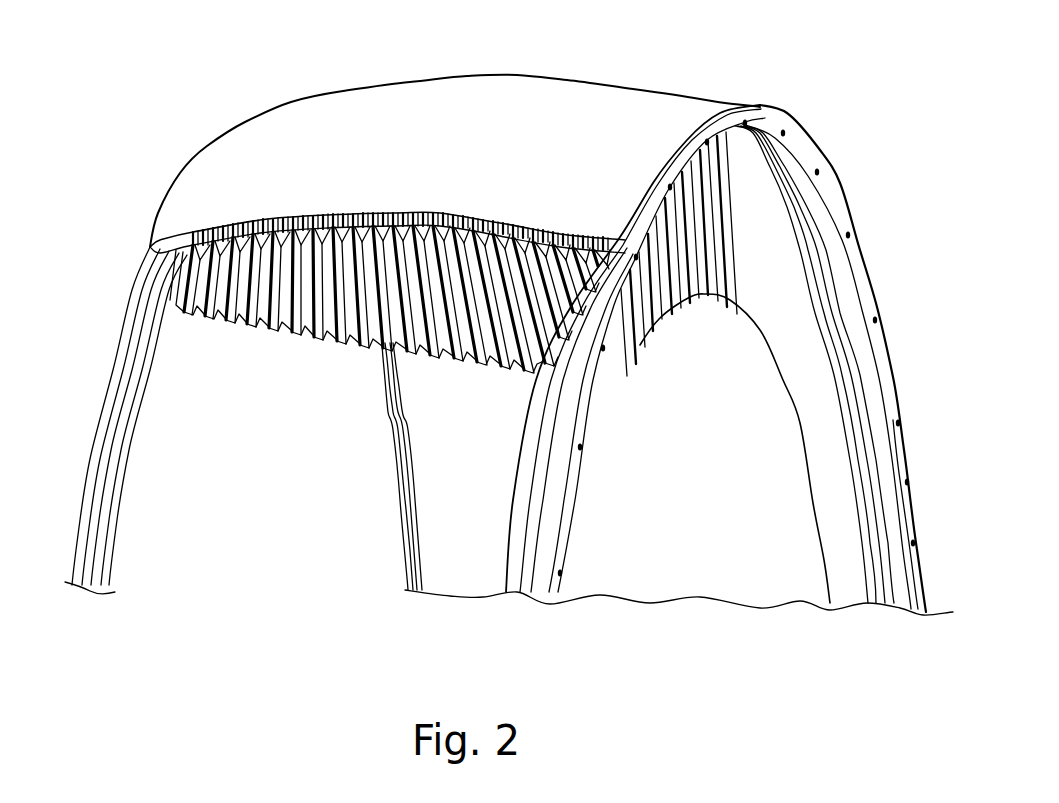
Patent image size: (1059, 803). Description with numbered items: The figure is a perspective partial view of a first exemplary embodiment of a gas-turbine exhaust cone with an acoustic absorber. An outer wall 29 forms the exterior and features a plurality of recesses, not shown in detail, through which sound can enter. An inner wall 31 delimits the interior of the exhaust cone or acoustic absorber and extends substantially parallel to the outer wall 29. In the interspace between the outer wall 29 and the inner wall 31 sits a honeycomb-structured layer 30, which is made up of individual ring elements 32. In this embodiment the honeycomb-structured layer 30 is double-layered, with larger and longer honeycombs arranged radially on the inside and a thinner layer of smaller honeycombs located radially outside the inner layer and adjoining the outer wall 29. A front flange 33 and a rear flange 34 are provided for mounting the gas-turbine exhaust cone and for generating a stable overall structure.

The outer wall 29 is at (583, 113).
The honeycomb-structured layer 30 is at (300, 345).
The inner wall 31 is at (800, 443).
The ring elements 32 is at (650, 323).
The front flange 33 is at (110, 467).
The rear flange 34 is at (550, 512).